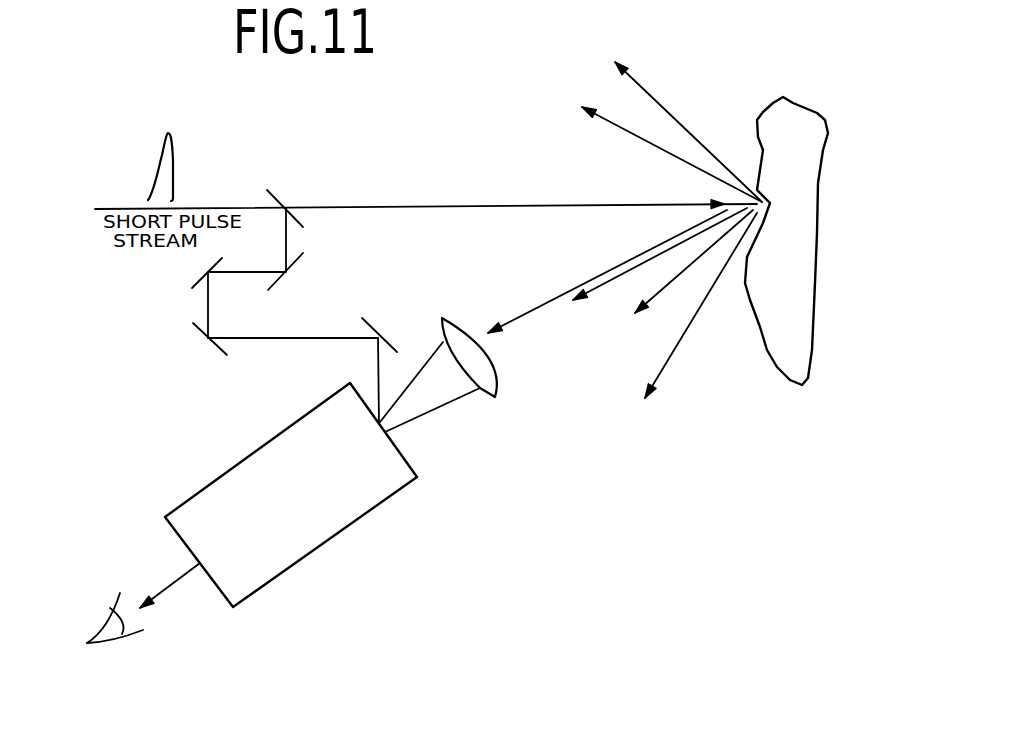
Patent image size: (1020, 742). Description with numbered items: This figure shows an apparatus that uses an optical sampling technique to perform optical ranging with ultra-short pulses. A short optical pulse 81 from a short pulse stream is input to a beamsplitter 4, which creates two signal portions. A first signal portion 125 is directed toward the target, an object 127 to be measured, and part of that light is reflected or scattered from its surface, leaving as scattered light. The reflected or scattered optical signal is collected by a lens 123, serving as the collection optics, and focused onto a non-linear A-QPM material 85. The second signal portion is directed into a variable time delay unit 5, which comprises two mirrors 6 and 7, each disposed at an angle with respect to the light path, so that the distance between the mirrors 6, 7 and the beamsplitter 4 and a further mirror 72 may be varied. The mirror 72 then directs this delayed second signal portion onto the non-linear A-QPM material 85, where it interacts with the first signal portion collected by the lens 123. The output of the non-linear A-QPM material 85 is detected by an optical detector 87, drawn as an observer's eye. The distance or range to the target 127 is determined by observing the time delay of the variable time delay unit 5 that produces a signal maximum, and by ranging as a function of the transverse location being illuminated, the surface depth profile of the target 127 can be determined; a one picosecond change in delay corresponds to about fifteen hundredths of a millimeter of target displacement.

The short optical pulse 81 is at (175, 163).
The beamsplitter 4 is at (285, 204).
The first signal portion 125 is at (426, 194).
The variable time delay unit 5 is at (233, 289).
The mirror 6 is at (215, 266).
The mirror 7 is at (220, 346).
The mirror 72 is at (382, 366).
The lens 123 is at (563, 327).
The object to be measured 127 is at (716, 253).
The non-linear A-QPM material 85 is at (291, 495).
The optical detector 87 is at (143, 612).